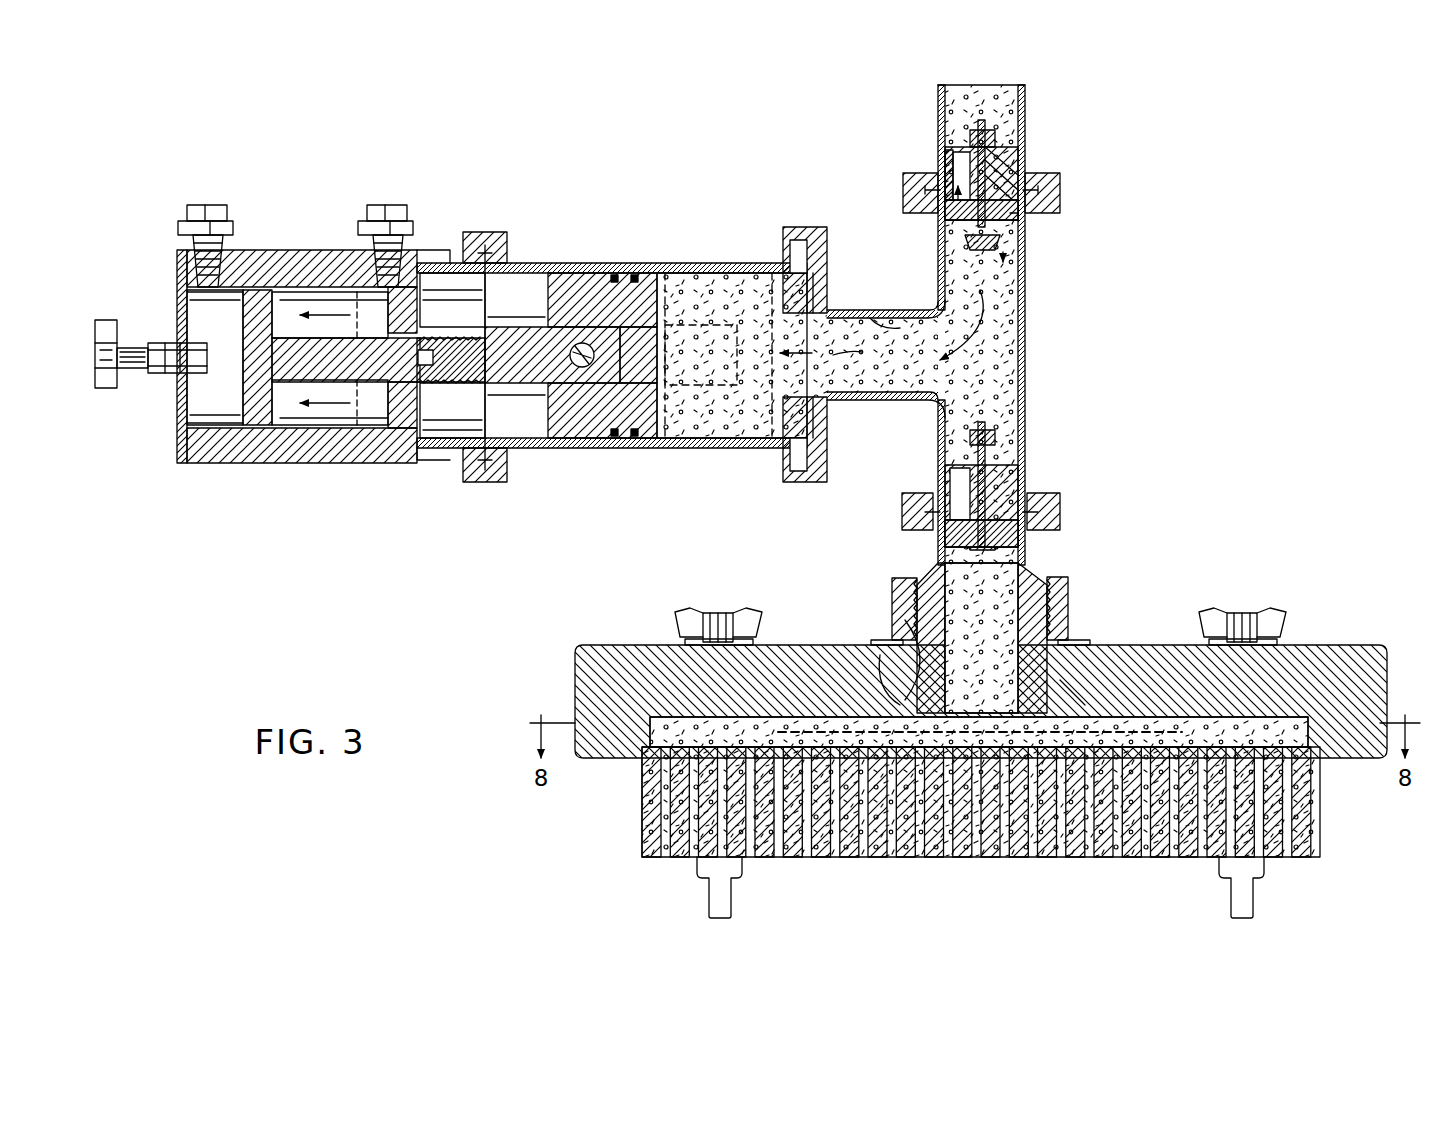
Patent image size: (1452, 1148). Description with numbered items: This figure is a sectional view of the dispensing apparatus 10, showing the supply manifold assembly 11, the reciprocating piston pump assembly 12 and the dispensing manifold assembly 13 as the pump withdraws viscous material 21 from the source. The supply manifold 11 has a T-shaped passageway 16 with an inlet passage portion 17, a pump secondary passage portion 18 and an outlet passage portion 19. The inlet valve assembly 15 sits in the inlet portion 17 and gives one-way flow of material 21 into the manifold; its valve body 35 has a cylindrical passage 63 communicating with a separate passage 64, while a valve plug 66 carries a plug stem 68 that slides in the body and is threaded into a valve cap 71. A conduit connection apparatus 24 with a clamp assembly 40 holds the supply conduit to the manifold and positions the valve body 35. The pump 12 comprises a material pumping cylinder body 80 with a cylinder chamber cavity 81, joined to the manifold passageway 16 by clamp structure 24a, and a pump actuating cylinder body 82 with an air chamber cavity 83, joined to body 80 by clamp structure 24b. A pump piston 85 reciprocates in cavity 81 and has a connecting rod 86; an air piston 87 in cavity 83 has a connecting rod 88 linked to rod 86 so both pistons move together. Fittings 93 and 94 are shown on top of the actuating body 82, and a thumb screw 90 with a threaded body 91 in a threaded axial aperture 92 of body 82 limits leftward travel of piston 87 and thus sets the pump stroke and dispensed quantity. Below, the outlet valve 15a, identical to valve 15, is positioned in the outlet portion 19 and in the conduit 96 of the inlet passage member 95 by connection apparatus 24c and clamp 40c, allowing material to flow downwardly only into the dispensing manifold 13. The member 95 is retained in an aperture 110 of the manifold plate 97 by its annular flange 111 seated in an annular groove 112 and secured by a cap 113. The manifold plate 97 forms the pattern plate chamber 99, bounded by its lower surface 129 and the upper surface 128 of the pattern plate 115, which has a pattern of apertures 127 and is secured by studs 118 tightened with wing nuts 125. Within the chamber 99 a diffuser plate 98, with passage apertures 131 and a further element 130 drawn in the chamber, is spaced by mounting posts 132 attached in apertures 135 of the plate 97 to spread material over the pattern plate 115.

The dispensing apparatus 10 is at (1092, 373).
The supply manifold assembly 11 is at (1032, 352).
The reciprocating piston pump assembly 12 is at (582, 262).
The dispensing manifold assembly 13 is at (1132, 642).
The inlet valve assembly 15 is at (1030, 173).
The outlet valve 15a is at (1030, 445).
The T-shaped passageway 16 is at (905, 320).
The inlet passage portion 17 is at (1030, 245).
The pump secondary passage portion 18 is at (862, 318).
The outlet passage portion 19 is at (1000, 480).
The viscous flowable material 21 is at (752, 305).
The conduit connection apparatus 24 is at (901, 190).
The conduit connecting clamp structure 24a is at (815, 224).
The conduit connecting clamp structure 24b is at (485, 235).
The conduit connection structural apparatus 24c is at (1064, 505).
The valve body 35 is at (1015, 152).
The clamp assembly 40 is at (1064, 188).
The clamp assembly 40c is at (900, 514).
The cylindrical passage 63 is at (1030, 215).
The separate passage 64 is at (945, 165).
The valve plug 66 is at (965, 247).
The plug stem 68 is at (985, 120).
The valve cap 71 is at (960, 145).
The material pumping cylinder body 80 is at (670, 263).
The cylinder chamber cavity 81 is at (728, 290).
The pump actuating cylinder body 82 is at (285, 255).
The air cylindrical chamber cavity 83 is at (333, 285).
The pump piston 85 is at (592, 290).
The connecting rod 86 is at (522, 330).
The air piston 87 is at (250, 290).
The connecting rod 88 is at (420, 333).
The thumb screw 90 is at (100, 320).
The threaded body 91 is at (163, 346).
The threaded axial aperture 92 is at (165, 365).
The screw 93 is at (380, 210).
The screw 94 is at (205, 212).
The inlet passage member 95 is at (1050, 605).
The conduit 96 is at (936, 566).
The manifold plate 97 is at (1352, 655).
The diffuser plate 98 is at (1112, 650).
The pattern plate chamber 99 is at (1250, 716).
The aperture 110 is at (905, 620).
The annular flange 111 is at (1082, 665).
The annular groove 112 is at (880, 660).
The cap 113 is at (1050, 585).
The pattern plate 115 is at (1322, 828).
The studs 118 is at (720, 612).
The wing nuts 125 is at (700, 630).
The apertures 127 is at (1304, 858).
The upper surface 128 is at (747, 720).
The lower surface 129 is at (707, 742).
The wire 130 is at (1077, 737).
The apertures 131 is at (935, 737).
The mounting posts 132 is at (920, 742).
The apertures 135 is at (905, 648).